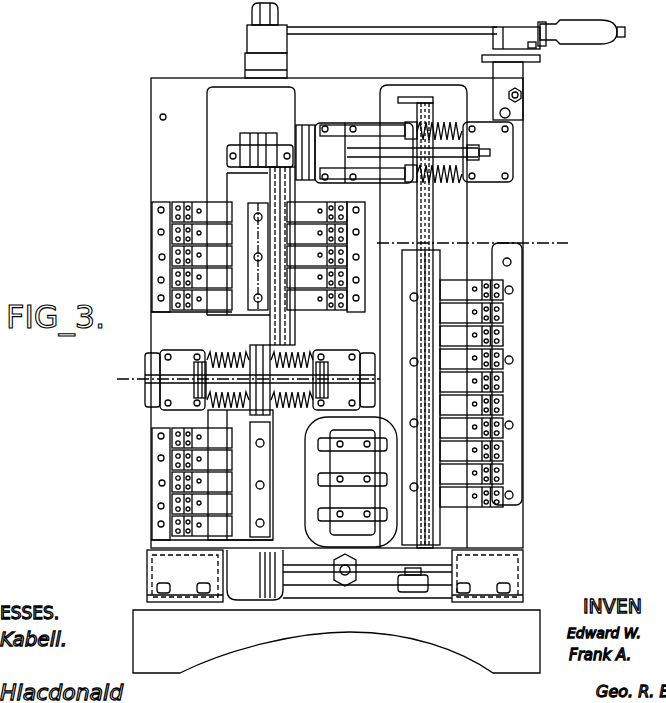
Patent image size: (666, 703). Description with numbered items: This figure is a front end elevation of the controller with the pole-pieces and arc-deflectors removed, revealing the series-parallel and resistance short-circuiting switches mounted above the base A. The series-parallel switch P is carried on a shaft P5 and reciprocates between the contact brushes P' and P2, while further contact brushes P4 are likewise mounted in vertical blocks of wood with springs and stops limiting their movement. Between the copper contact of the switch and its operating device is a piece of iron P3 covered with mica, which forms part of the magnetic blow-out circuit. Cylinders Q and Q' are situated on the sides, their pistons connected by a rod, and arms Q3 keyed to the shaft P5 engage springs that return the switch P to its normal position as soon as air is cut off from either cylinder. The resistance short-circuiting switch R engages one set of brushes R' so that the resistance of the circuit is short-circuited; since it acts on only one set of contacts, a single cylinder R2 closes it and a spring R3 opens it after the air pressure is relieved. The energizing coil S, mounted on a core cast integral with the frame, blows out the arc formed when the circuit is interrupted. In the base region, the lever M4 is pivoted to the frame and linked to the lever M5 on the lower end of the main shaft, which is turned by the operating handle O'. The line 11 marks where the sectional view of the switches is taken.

The base A is at (212, 640).
The operating handle O' is at (581, 52).
The series-parallel switch P is at (235, 201).
The contact brushes P' is at (326, 273).
The contact brushes P2 is at (158, 452).
The piece of iron P3 is at (284, 192).
The contact brushes P4 is at (158, 228).
The shaft P5 is at (227, 166).
The series switch cylinder Q is at (175, 366).
The multiple switch cylinder Q' is at (344, 366).
The arms Q3 is at (258, 352).
The resistance short-circuiting switch R is at (428, 382).
The brushes R' is at (508, 375).
The cylinder R2 is at (345, 126).
The spring R3 is at (455, 118).
The energizing coil S is at (310, 492).
The lever M4 is at (402, 580).
The lever M5 is at (348, 590).
The section line 11 is at (344, 312).